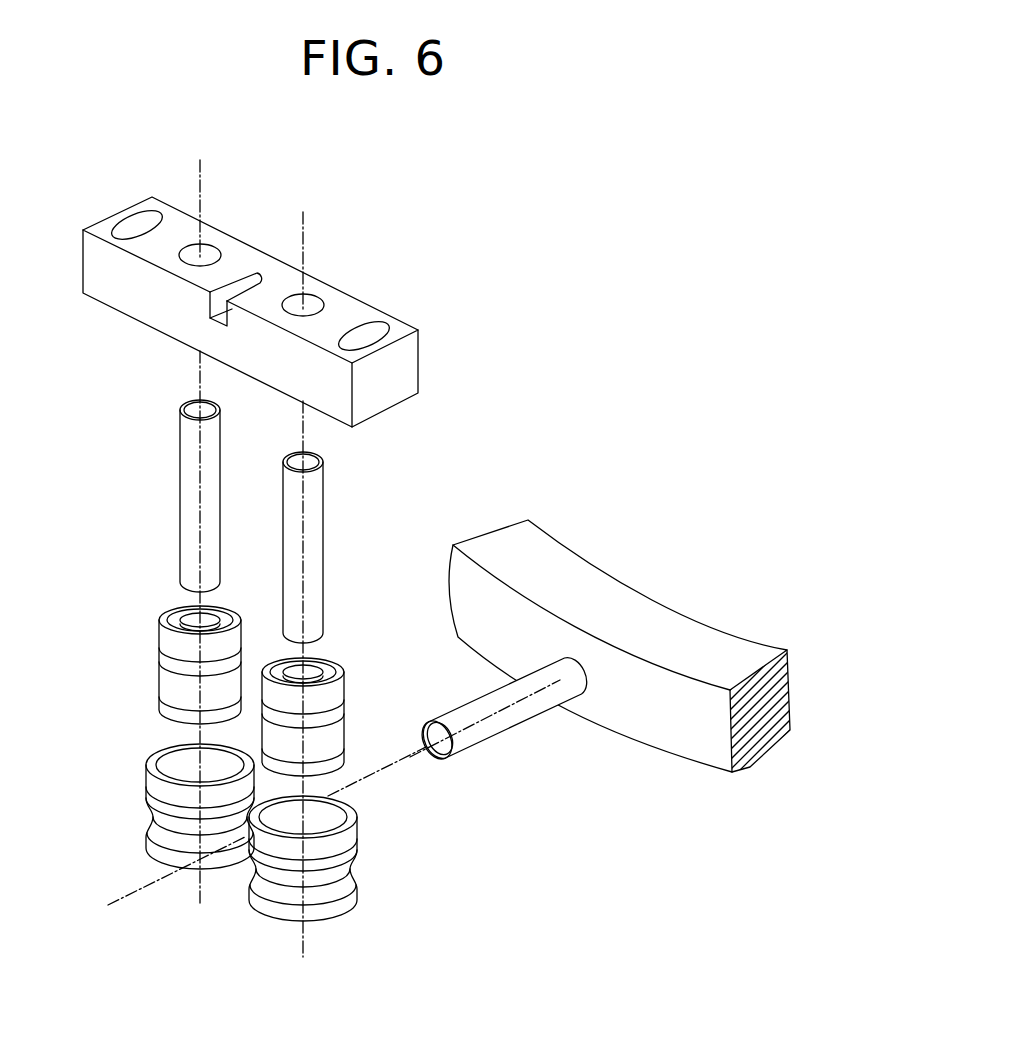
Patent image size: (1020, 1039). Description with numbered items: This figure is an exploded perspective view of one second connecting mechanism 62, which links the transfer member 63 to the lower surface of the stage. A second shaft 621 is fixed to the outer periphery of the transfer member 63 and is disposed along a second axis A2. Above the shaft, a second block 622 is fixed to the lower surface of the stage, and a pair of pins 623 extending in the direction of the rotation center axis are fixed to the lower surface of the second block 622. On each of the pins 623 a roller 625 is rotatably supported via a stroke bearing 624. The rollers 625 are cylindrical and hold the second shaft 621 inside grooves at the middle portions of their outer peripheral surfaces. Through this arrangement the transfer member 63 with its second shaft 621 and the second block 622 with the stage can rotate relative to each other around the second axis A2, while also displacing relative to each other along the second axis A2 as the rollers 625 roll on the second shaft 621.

The second connecting mechanism 62 is at (504, 907).
The second shaft 621 is at (510, 712).
The second block 622 is at (242, 258).
The pins 623 is at (290, 538).
The stroke bearing 624 is at (292, 737).
The roller 625 is at (213, 862).
The transfer member 63 is at (710, 658).
The second axis A2 is at (133, 893).